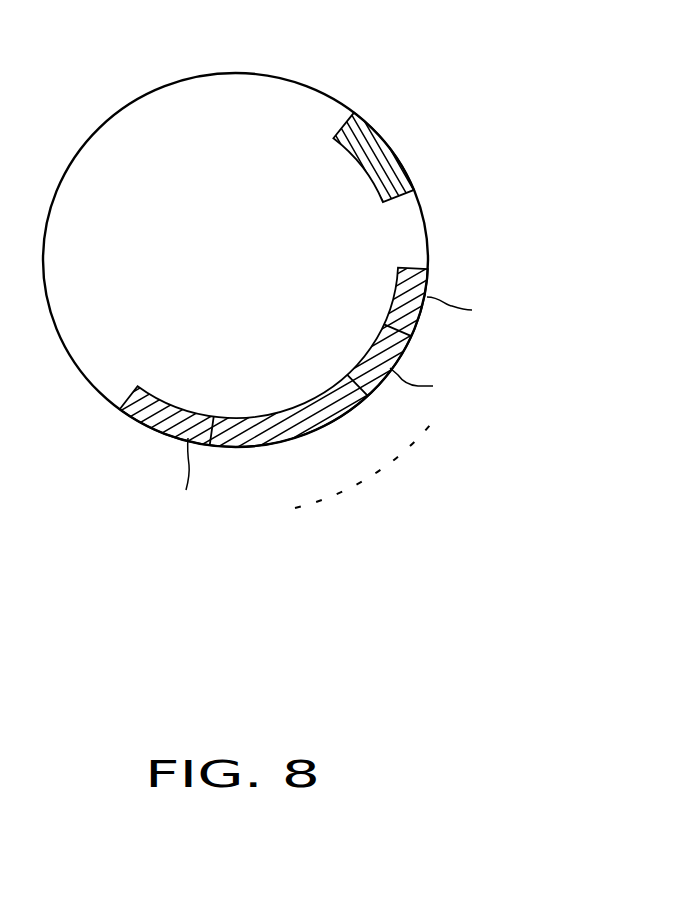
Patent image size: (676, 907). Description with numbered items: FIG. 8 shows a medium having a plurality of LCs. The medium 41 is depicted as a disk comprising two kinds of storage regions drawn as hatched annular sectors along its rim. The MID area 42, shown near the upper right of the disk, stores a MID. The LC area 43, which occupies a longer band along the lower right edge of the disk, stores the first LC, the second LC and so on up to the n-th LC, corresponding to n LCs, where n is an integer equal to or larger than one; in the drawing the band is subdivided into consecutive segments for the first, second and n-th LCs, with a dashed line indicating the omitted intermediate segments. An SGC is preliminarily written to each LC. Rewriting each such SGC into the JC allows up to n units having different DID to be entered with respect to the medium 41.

The medium 41 is at (226, 73).
The MID area 42 is at (386, 139).
The LC area 43 is at (280, 406).